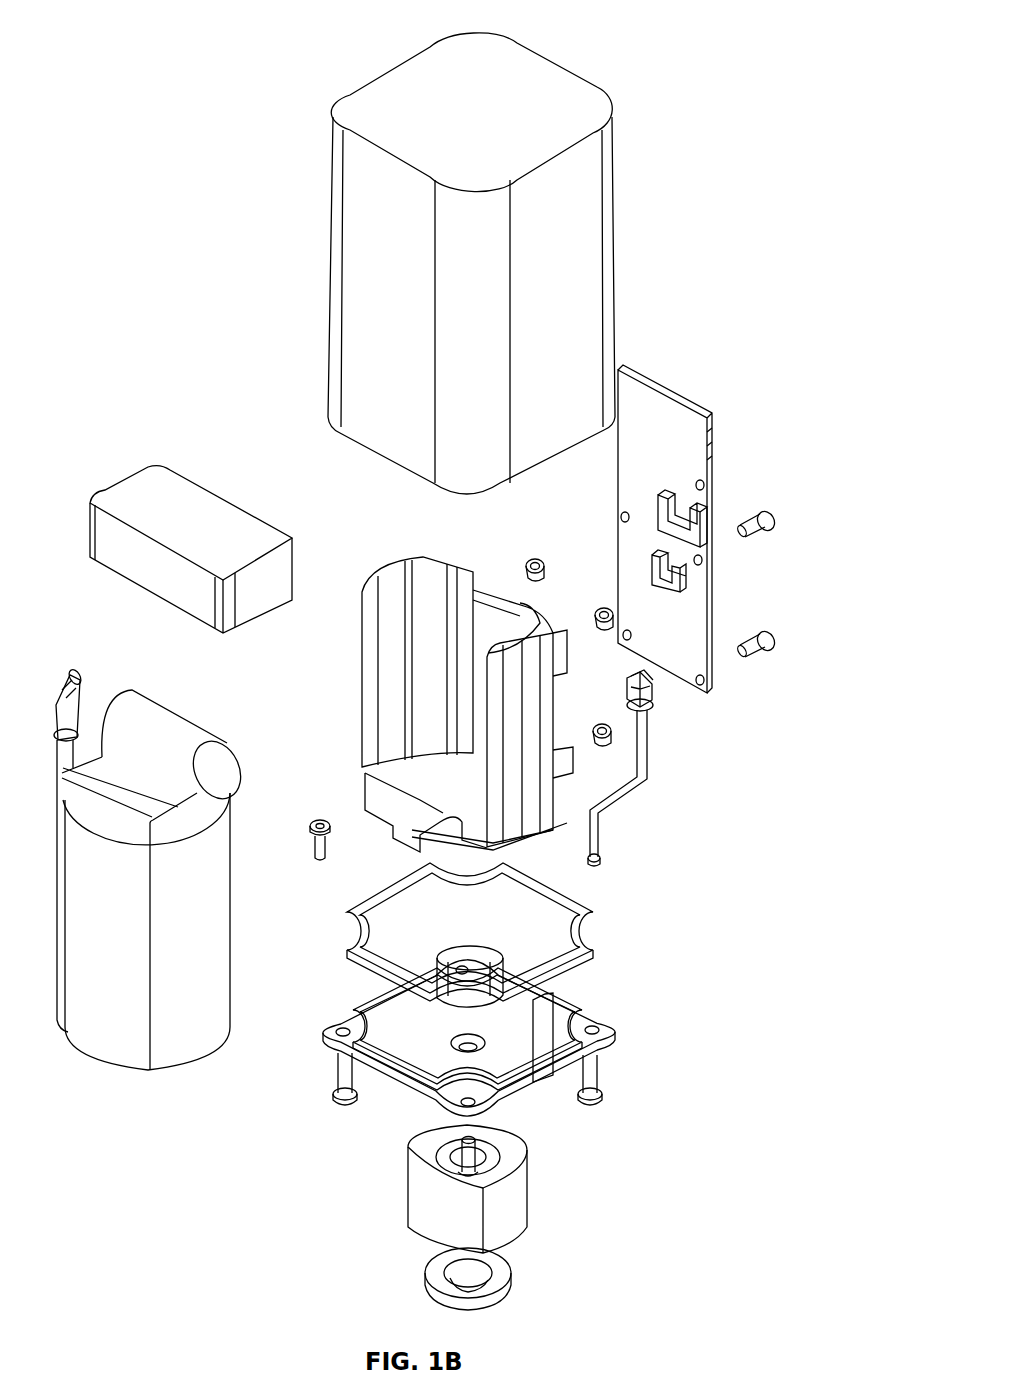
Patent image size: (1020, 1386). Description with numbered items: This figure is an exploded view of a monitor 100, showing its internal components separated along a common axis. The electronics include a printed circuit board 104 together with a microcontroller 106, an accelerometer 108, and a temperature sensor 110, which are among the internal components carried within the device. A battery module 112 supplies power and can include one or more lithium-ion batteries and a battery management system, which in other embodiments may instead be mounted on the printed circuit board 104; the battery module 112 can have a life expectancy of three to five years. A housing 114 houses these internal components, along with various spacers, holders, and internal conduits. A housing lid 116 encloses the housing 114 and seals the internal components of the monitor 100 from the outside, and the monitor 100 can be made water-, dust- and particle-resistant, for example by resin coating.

The monitor 100 is at (234, 28).
The printed circuit board 104 is at (660, 383).
The microcontroller 106 is at (684, 578).
The accelerometer 108 is at (704, 520).
The temperature sensor 110 is at (652, 700).
The battery module 112 is at (135, 485).
The housing 114 is at (610, 192).
The housing lid 116 is at (602, 1055).